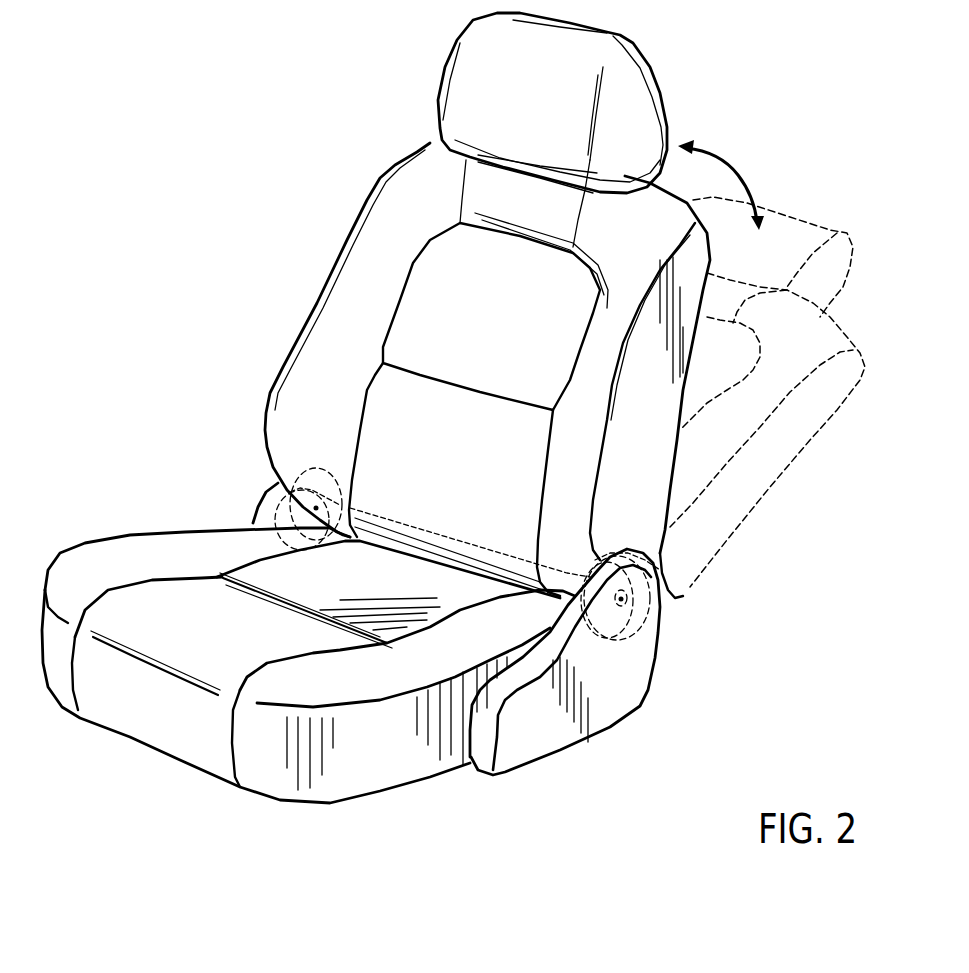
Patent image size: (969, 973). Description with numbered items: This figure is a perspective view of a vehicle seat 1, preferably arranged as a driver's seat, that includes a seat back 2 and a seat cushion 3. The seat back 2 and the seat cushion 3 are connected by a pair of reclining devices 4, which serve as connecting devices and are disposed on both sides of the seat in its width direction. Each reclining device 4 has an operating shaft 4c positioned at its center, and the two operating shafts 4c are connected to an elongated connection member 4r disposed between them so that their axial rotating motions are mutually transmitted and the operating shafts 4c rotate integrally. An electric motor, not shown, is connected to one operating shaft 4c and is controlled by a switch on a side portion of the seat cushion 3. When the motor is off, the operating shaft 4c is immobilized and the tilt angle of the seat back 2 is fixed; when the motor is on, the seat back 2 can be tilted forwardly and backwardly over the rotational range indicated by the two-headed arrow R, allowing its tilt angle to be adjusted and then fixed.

The vehicle seat 1 is at (312, 172).
The seat back 2 is at (360, 288).
The seat cushion 3 is at (130, 563).
The reclining device 4 is at (316, 470).
The operating shaft 4c is at (317, 506).
The connection member 4r is at (437, 540).